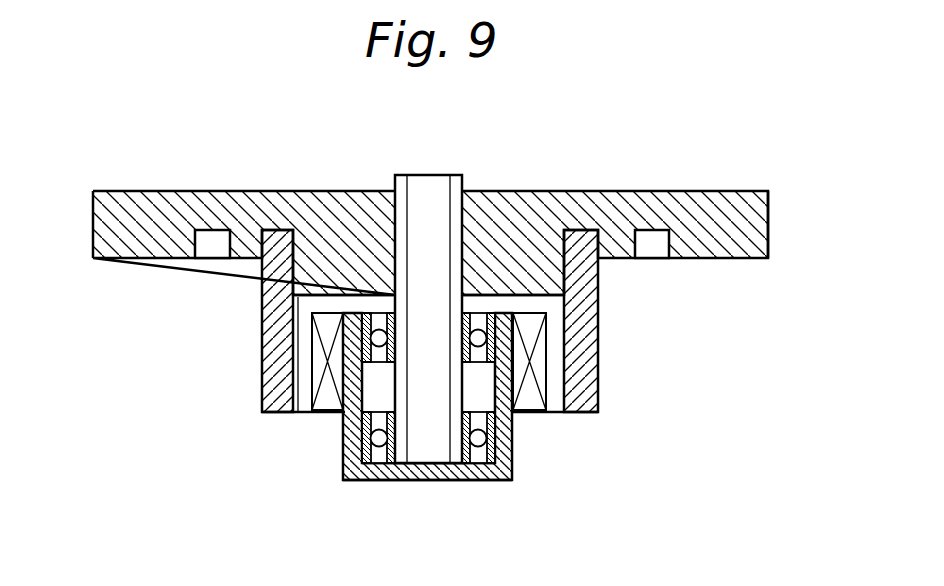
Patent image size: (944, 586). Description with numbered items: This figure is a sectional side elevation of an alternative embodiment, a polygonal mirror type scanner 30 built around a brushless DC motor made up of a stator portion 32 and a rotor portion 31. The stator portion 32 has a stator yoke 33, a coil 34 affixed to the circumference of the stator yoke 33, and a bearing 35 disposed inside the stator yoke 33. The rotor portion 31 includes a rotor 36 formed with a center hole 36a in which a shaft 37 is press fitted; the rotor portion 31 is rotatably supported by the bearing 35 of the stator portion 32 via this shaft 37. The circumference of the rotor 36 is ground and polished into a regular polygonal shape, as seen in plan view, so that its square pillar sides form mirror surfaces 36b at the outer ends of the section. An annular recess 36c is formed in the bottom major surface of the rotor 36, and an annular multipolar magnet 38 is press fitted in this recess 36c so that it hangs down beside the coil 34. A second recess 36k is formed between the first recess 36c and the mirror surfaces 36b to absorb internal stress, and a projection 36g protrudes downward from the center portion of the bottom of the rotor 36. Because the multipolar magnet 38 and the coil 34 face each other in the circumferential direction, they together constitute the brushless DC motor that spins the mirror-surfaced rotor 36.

The polygonal mirror type scanner 30 is at (773, 128).
The rotor portion 31 is at (598, 178).
The stator portion 32 is at (474, 492).
The stator yoke 33 is at (422, 482).
The coil 34 is at (322, 413).
The bearing 35 is at (388, 482).
The rotor 36 is at (668, 191).
The center hole 36a is at (465, 182).
The mirror surfaces 36b is at (93, 243).
The annular recess 36c is at (262, 277).
The projection 36g is at (553, 297).
The second recess 36k is at (210, 232).
The shaft 37 is at (417, 175).
The annular multipolar magnet 38 is at (262, 388).